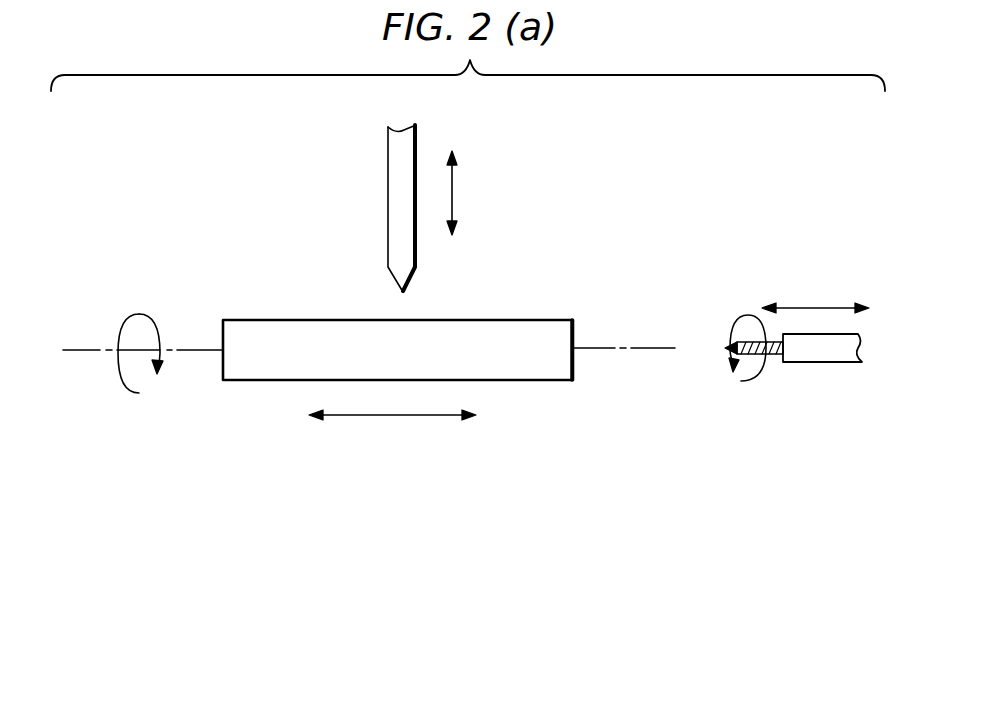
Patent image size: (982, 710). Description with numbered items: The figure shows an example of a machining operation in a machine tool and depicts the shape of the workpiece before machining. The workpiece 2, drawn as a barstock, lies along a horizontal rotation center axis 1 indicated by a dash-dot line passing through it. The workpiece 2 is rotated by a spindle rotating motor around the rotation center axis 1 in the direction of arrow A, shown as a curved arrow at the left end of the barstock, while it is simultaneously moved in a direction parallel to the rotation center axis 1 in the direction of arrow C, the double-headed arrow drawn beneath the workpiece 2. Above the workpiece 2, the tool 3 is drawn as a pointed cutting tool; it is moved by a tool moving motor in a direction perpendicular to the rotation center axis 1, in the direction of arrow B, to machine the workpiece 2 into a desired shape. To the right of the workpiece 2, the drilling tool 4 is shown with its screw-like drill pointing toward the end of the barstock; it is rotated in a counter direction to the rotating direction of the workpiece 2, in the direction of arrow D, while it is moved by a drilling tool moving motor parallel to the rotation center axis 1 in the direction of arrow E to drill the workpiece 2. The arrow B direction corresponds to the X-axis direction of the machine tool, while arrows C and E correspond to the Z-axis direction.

The rotation center axis 1 is at (637, 348).
The workpiece 2 is at (524, 380).
The tool 3 is at (393, 216).
The drilling tool 4 is at (812, 362).
The arrow A is at (140, 314).
The arrow B is at (452, 183).
The arrow C is at (415, 415).
The arrow D is at (747, 366).
The arrow E is at (812, 306).